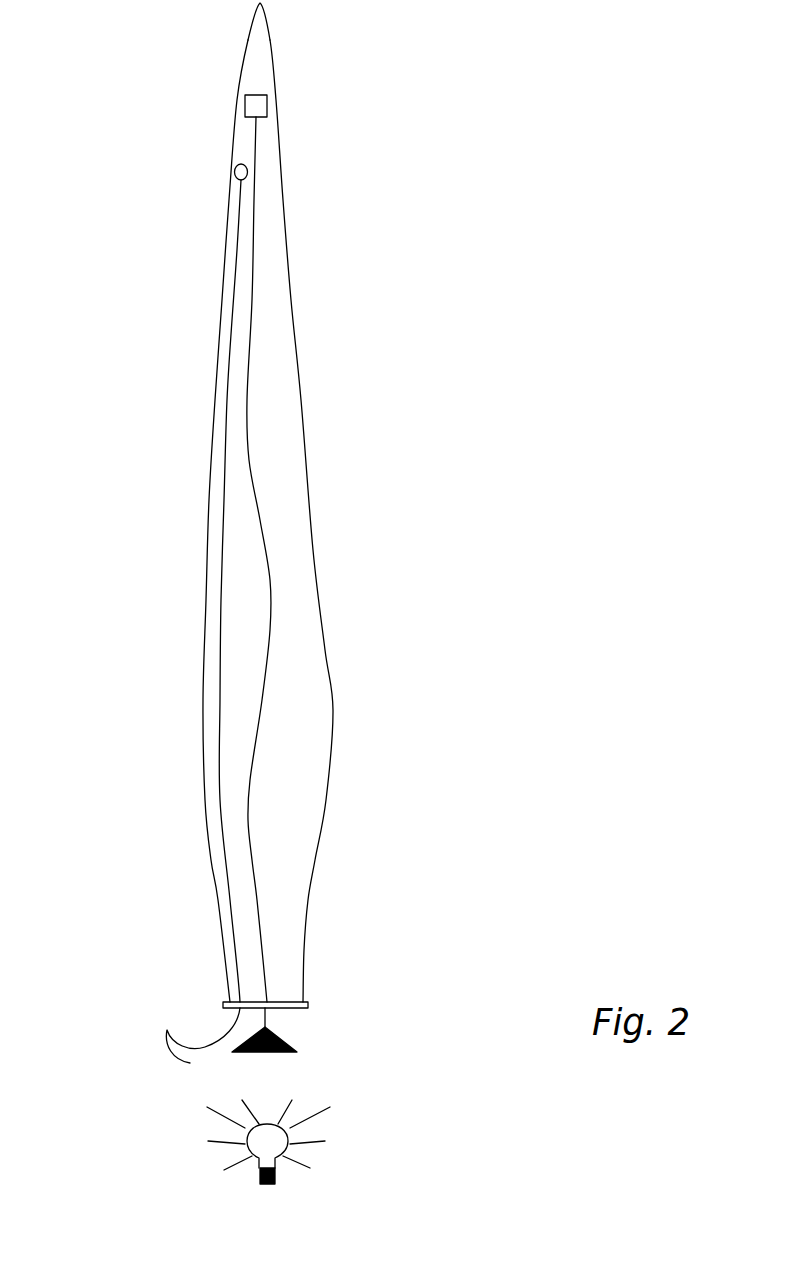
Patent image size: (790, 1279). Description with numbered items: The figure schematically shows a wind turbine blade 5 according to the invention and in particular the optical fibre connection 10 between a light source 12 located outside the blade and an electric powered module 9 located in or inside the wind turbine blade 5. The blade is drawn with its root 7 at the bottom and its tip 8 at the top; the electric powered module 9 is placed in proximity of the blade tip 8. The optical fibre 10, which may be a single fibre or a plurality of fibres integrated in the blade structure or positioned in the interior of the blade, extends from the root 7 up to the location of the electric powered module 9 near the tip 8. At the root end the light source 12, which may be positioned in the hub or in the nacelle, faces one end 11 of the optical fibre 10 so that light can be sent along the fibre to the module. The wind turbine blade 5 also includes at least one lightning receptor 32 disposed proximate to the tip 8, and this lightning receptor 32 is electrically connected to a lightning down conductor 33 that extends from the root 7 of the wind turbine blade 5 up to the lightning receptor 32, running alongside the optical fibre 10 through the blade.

The wind turbine blade 5 is at (157, 727).
The root 7 is at (308, 1005).
The tip 8 is at (278, 32).
The electric powered module 9 is at (267, 116).
The optical fibre connection 10 is at (247, 347).
The end of the optical fibre 11 is at (297, 1052).
The light source 12 is at (315, 1145).
The lightning receptor 32 is at (234, 172).
The lightning down conductor 33 is at (235, 252).